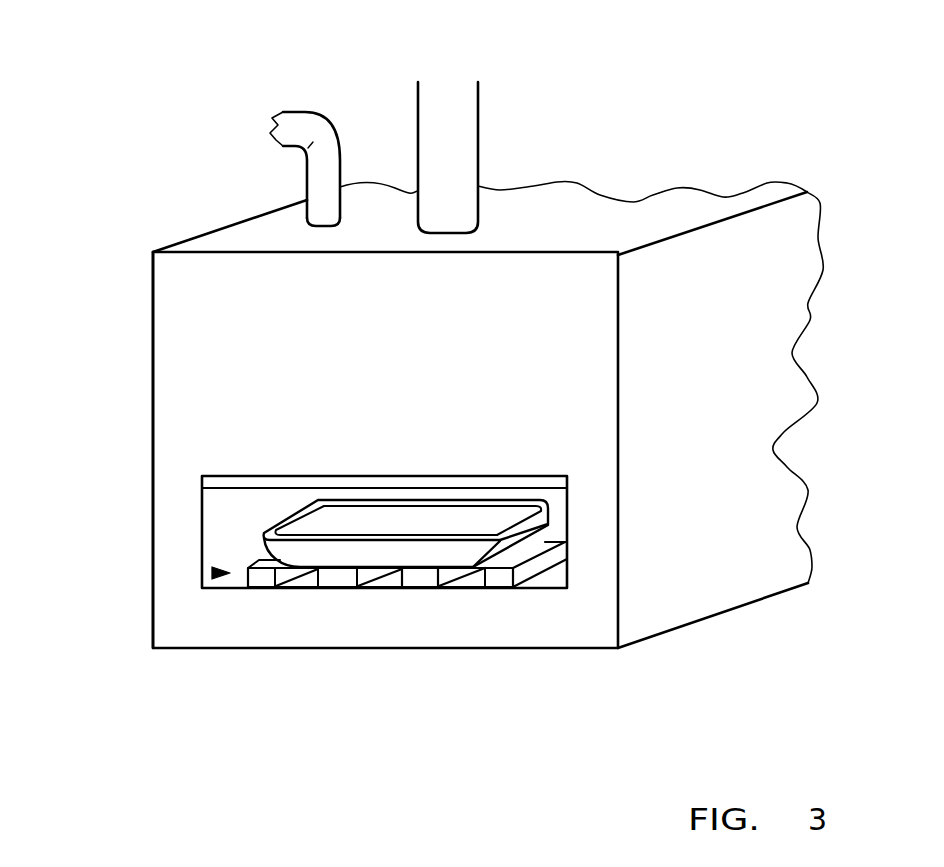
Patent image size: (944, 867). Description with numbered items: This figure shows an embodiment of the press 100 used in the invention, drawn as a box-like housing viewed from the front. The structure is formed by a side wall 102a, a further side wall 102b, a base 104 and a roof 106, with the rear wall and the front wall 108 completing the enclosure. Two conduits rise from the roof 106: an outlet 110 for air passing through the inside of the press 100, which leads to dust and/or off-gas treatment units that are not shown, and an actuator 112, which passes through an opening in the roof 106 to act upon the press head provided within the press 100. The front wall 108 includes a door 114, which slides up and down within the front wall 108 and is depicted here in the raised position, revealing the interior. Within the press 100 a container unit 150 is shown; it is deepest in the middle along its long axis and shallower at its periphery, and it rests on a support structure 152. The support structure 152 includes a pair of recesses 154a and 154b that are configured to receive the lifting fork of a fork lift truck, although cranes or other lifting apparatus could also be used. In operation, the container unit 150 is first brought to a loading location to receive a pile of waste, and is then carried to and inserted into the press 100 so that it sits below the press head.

The press 100 is at (458, 428).
The side wall 102a is at (718, 503).
The further side wall 102b is at (153, 407).
The base 104 is at (520, 650).
The roof 106 is at (555, 222).
The front wall 108 is at (245, 320).
The outlet 110 is at (307, 153).
The actuator 112 is at (455, 125).
The door 114 is at (507, 482).
The container unit 150 is at (305, 557).
The support structure 152 is at (214, 572).
The recess 154a is at (350, 577).
The recess 154b is at (427, 580).